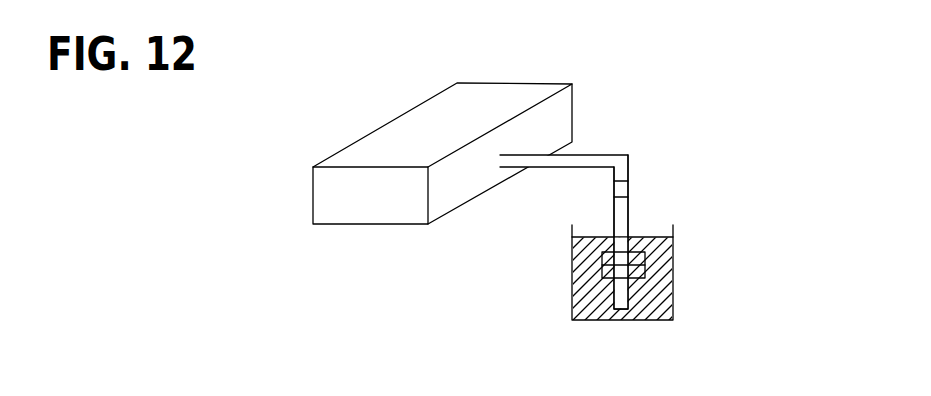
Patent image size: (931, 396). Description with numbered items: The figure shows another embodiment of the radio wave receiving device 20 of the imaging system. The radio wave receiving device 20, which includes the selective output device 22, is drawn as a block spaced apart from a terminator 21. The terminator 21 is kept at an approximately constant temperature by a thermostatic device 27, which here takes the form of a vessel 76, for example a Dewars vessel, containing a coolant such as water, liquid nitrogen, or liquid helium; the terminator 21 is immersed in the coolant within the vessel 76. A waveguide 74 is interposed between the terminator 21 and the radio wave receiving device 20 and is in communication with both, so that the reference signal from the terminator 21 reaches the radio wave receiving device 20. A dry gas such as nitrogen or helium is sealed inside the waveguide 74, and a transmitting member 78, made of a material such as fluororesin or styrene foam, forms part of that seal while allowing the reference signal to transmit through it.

The radio wave receiving device 20 is at (700, 90).
The selective output device 22 is at (356, 152).
The waveguide 74 is at (593, 154).
The transmitting member 78 is at (622, 191).
The vessel 76 is at (673, 231).
The thermostatic device 27 is at (737, 278).
The terminator 21 is at (622, 303).